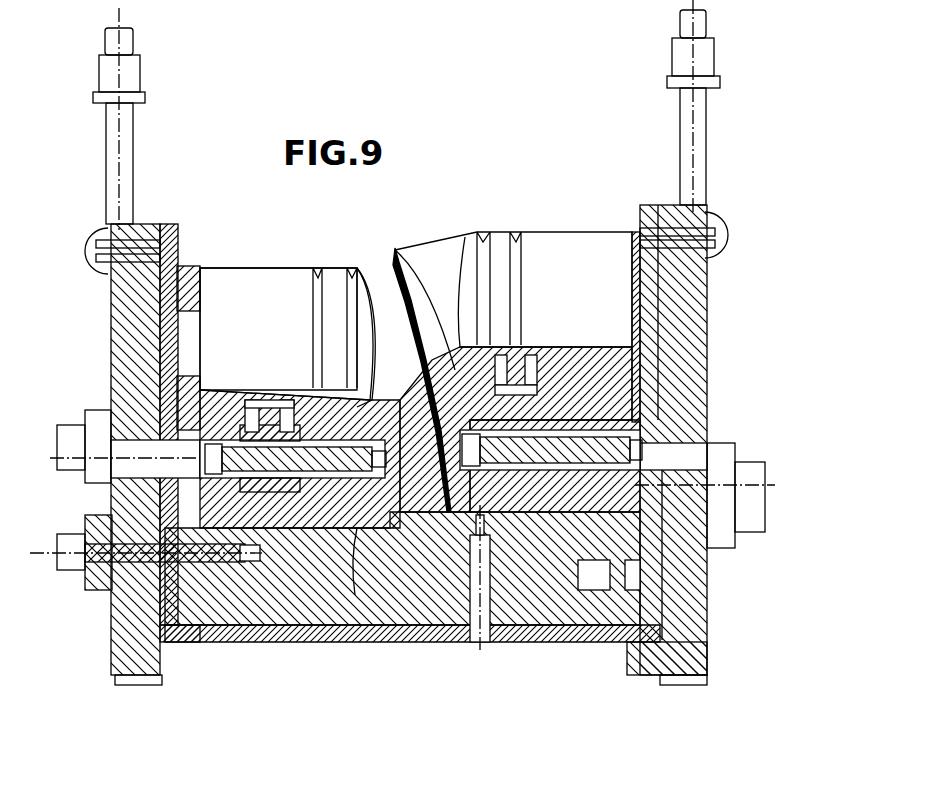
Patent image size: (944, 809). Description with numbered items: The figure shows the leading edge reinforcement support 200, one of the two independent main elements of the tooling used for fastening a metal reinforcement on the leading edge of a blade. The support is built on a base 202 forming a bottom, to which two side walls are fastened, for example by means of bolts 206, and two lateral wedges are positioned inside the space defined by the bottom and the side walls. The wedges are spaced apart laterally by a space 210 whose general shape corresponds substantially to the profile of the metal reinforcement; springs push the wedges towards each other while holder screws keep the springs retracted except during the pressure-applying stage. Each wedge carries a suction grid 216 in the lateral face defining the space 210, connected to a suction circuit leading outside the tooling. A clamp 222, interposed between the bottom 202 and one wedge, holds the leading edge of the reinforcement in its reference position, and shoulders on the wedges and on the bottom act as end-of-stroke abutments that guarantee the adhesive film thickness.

The leading edge reinforcement support 200 is at (718, 322).
The base 202 is at (358, 595).
The bolts 206 is at (68, 530).
The space 210 is at (418, 298).
The suction grid 216 is at (420, 437).
The clamp 222 is at (495, 540).